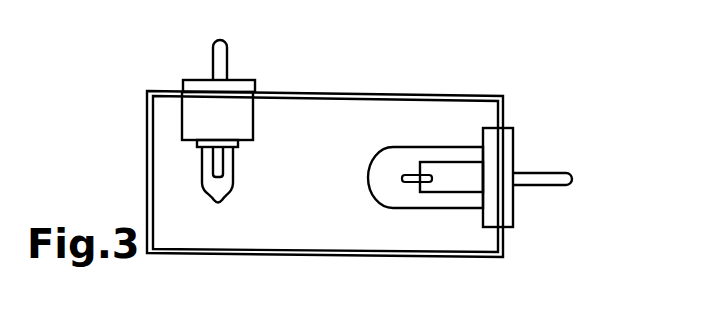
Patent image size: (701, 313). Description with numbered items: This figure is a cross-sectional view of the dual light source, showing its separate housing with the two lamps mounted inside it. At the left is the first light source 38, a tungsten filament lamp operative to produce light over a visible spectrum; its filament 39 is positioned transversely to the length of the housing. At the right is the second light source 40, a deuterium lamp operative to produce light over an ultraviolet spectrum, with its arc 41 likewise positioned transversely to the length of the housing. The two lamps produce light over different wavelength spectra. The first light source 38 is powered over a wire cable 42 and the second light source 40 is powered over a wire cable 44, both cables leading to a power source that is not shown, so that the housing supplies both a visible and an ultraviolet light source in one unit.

The first light source 38 is at (244, 168).
The filament 39 is at (200, 173).
The second light source 40 is at (430, 130).
The arc 41 is at (403, 183).
The wire cable 42 is at (213, 50).
The wire cable 44 is at (540, 175).